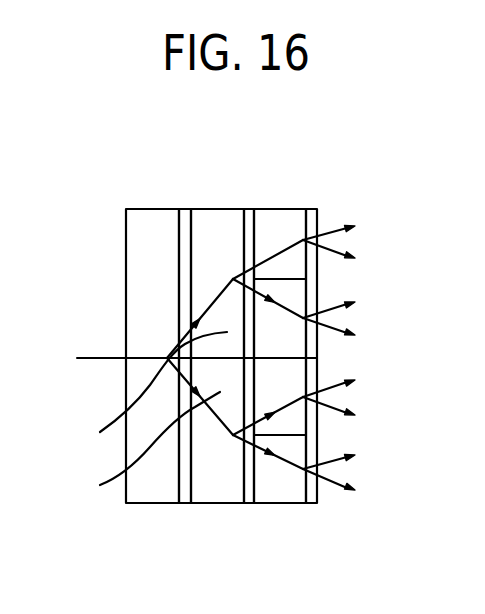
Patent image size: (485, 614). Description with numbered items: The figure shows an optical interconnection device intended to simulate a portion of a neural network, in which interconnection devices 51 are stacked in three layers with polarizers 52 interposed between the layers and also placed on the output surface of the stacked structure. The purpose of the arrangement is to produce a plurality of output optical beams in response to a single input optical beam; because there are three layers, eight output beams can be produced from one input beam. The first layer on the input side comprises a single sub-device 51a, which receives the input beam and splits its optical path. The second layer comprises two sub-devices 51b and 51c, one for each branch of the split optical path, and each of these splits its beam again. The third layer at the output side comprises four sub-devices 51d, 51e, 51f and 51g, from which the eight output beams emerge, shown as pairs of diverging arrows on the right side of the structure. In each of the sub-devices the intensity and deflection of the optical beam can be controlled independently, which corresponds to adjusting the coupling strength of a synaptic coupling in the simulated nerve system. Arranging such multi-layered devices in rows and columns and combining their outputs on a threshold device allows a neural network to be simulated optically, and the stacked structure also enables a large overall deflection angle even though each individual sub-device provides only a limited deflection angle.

The interconnection device 51 is at (277, 205).
The polarizer 52 is at (253, 209).
The sub-device 51a is at (140, 303).
The sub-device 51b is at (140, 390).
The sub-device 51c is at (136, 445).
The sub-device 51d is at (314, 218).
The sub-device 51e is at (316, 293).
The sub-device 51f is at (313, 372).
The sub-device 51g is at (359, 462).